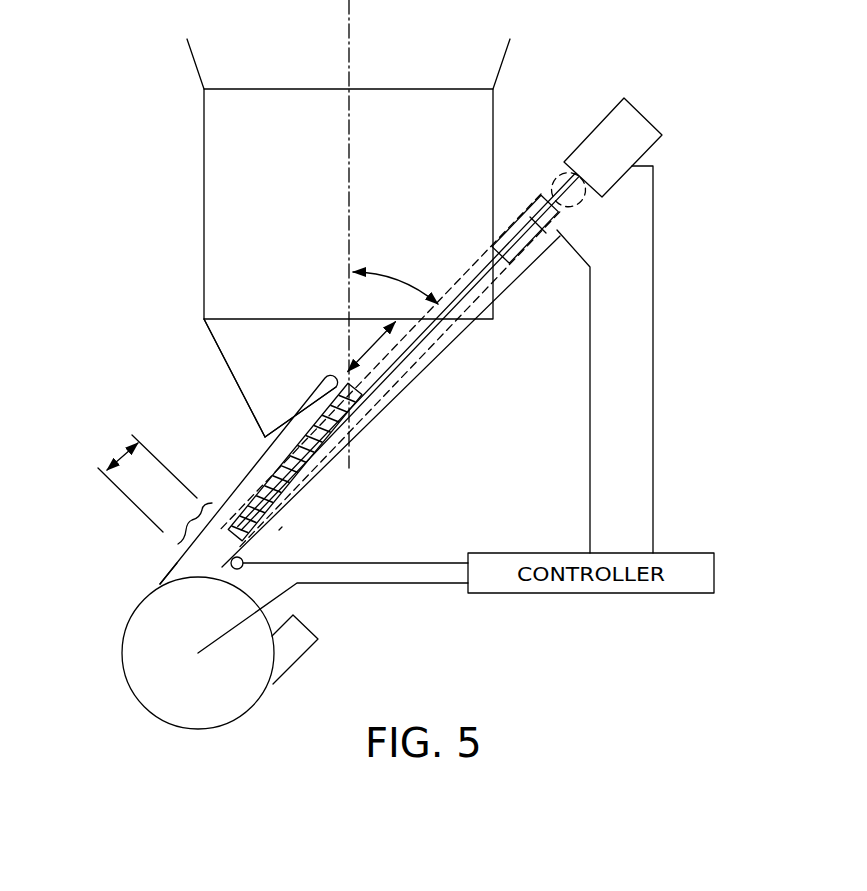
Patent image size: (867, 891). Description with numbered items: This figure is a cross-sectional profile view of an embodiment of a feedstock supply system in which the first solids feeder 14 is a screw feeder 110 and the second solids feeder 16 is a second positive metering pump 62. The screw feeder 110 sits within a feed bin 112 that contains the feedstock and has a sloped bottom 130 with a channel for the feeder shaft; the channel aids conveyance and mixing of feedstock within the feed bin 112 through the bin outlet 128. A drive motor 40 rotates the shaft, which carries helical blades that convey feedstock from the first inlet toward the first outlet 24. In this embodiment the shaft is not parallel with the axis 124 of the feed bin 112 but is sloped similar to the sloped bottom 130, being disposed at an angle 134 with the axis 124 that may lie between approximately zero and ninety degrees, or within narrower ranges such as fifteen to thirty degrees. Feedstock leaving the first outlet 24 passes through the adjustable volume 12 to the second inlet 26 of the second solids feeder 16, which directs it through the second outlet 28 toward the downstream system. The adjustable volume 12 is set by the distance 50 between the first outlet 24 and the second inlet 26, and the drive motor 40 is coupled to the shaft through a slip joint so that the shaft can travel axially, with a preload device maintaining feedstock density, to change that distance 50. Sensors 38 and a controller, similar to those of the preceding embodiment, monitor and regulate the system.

The adjustable volume 12 is at (155, 489).
The first solids feeder 14 is at (227, 378).
The second solids feeder 16 is at (198, 700).
The first outlet 24 is at (208, 501).
The second inlet 26 is at (175, 563).
The second outlet 28 is at (310, 624).
The sensors 38 is at (560, 219).
The drive motor 40 is at (646, 118).
The distance 50 is at (117, 456).
The second positive metering pump 62 is at (185, 728).
The screw feeder 110 is at (264, 436).
The feed bin 112 is at (204, 206).
The axis 124 is at (349, 27).
The bin outlet 128 is at (280, 529).
The sloped bottom 130 is at (390, 426).
The angle 134 is at (425, 292).